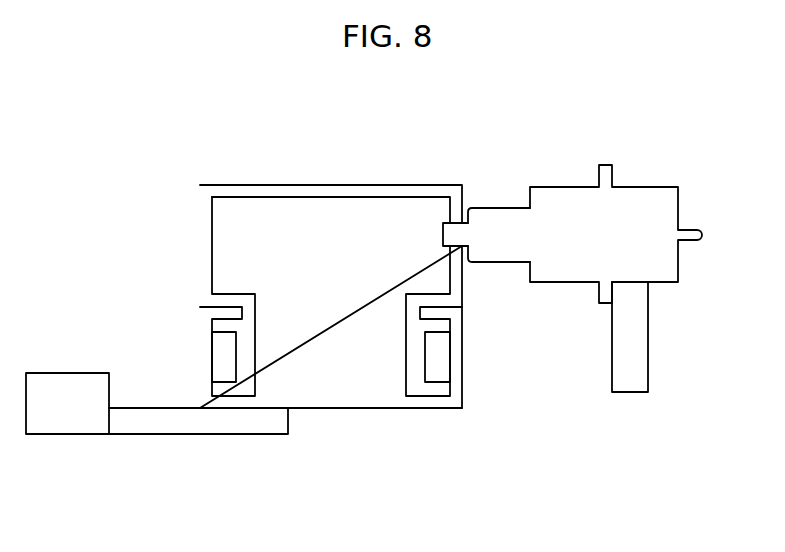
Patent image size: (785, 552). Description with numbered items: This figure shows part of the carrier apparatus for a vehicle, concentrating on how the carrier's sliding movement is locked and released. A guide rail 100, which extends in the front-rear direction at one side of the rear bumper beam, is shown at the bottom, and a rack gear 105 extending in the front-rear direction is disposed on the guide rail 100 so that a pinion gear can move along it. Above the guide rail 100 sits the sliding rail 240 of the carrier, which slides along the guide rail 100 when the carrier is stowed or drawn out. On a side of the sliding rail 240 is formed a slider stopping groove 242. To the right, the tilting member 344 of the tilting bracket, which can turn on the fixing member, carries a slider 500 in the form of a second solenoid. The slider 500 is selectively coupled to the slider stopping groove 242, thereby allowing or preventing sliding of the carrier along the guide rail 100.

The guide rail 100 is at (331, 400).
The rack gear 105 is at (65, 428).
The sliding rail 240 is at (338, 186).
The slider stopping groove 242 is at (458, 241).
The tilting member 344 is at (640, 337).
The slider 500 is at (643, 200).